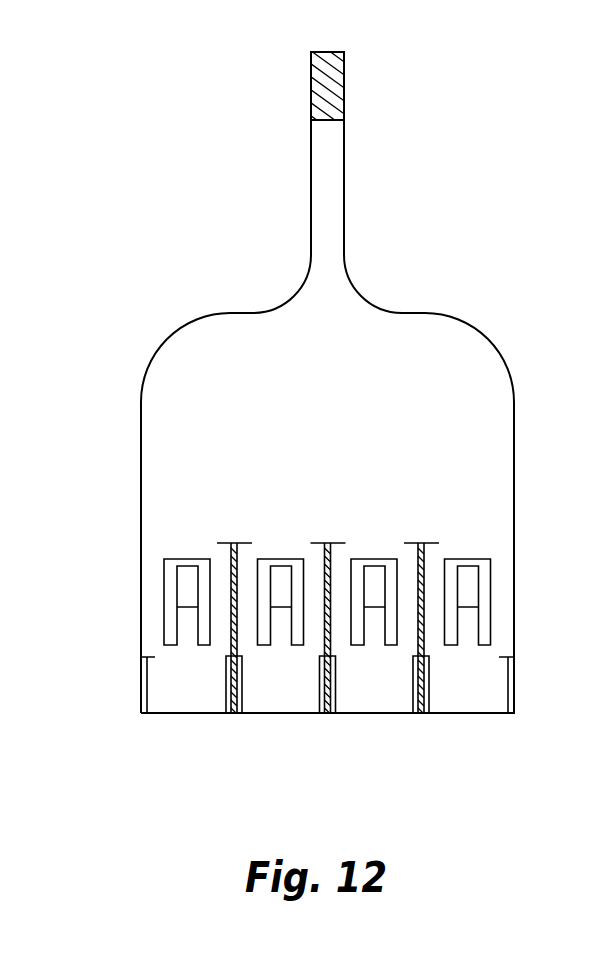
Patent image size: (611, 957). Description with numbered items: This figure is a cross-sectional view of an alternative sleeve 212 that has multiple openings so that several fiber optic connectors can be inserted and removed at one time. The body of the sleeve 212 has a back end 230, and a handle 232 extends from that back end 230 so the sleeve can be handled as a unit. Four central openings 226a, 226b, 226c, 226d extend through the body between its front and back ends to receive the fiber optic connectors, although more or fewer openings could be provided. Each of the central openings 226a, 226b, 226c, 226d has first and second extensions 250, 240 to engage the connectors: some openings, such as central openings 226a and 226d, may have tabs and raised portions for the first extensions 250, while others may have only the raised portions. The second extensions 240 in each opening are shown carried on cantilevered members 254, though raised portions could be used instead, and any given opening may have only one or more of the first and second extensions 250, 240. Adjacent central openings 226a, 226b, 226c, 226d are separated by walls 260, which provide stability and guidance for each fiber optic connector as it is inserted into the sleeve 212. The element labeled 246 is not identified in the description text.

The sleeve 212 is at (557, 100).
The back end 230 is at (160, 345).
The handle 232 is at (337, 92).
The central opening 226a is at (181, 678).
The central opening 226b is at (278, 687).
The central opening 226c is at (365, 687).
The central opening 226d is at (464, 700).
The second extension 240 is at (145, 678).
The divider base 246 is at (238, 697).
The first extension 250 is at (188, 580).
The cantilevered member 254 is at (185, 625).
The wall 260 is at (223, 543).